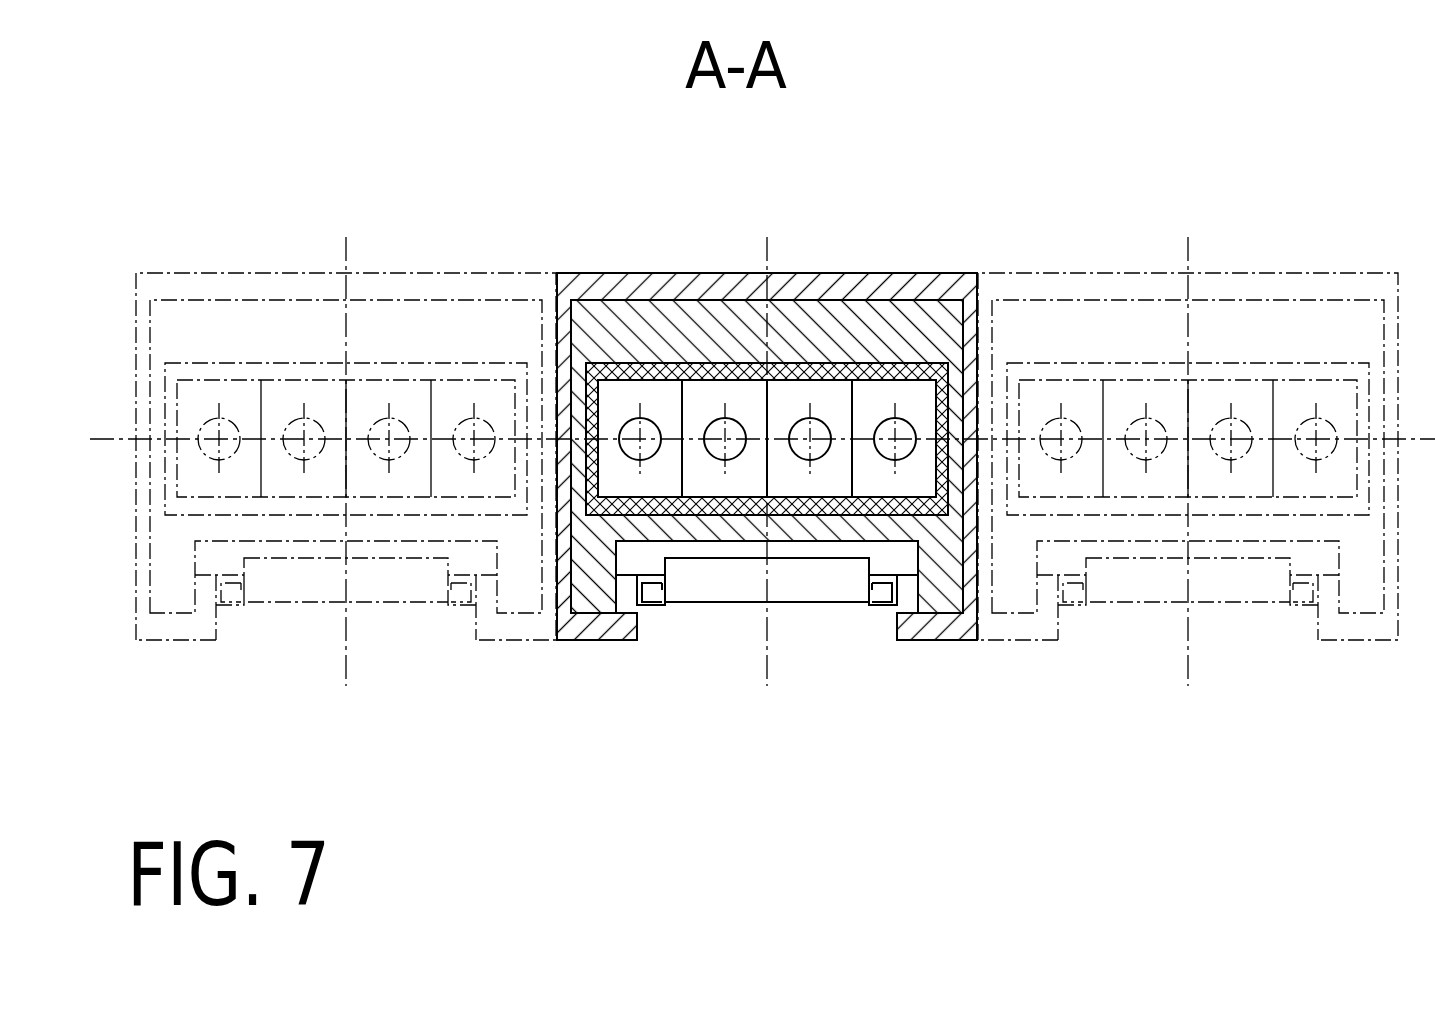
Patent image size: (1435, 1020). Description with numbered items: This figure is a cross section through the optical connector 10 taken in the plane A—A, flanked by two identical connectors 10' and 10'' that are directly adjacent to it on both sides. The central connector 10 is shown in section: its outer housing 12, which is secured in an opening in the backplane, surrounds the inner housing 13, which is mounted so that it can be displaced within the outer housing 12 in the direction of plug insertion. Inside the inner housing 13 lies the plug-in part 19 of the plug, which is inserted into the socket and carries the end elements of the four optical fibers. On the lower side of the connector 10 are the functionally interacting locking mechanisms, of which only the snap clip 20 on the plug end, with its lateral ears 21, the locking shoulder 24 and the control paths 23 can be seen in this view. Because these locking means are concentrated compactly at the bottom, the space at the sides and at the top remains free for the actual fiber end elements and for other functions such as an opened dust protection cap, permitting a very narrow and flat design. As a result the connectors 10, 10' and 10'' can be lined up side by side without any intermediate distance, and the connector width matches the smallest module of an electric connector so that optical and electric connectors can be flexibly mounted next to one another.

The connector 10 is at (802, 470).
The connector 10' is at (346, 362).
The connector 10'' is at (1188, 362).
The outer housing 12 is at (920, 288).
The inner housing 13 is at (635, 332).
The plug-in part 19 is at (742, 368).
The snap clip 20 is at (805, 582).
The lateral ears 21 is at (657, 592).
The control paths 23 is at (645, 605).
The locking shoulder 24 is at (900, 557).